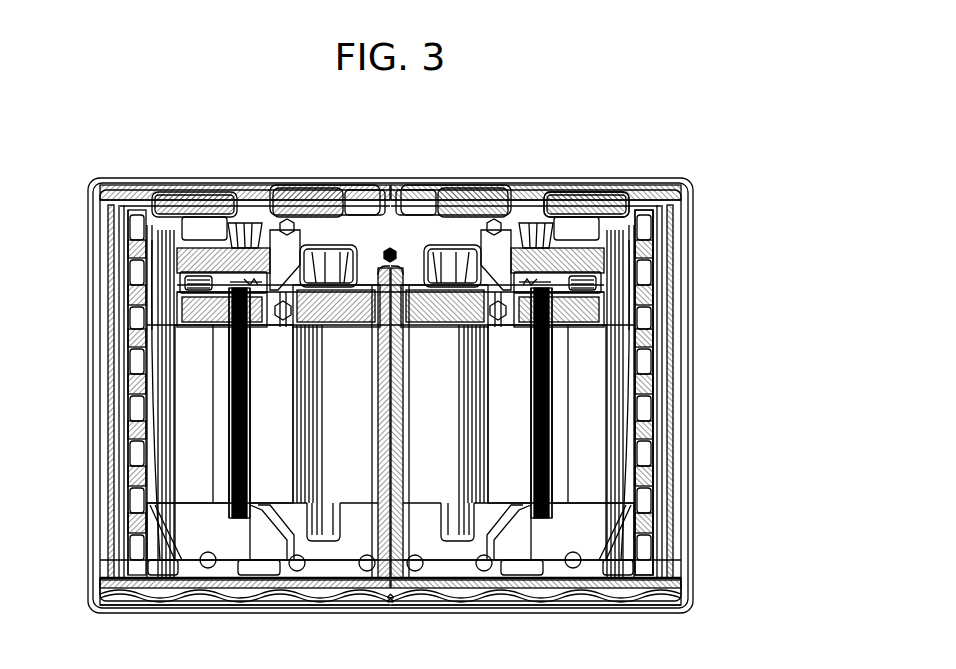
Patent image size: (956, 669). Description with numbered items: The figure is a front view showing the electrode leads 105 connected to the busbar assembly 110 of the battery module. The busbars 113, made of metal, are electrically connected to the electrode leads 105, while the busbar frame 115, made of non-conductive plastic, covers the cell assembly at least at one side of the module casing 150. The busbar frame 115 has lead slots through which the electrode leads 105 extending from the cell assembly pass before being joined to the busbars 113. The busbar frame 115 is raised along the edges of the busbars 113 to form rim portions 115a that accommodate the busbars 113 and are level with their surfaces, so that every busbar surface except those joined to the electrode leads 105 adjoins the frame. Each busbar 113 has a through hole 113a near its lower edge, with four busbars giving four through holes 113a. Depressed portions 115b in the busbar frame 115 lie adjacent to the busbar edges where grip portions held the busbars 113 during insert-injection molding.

The busbar assembly 110 is at (697, 216).
The module casing 150 is at (582, 188).
The busbar frame 115 is at (645, 293).
The depressed portion 115b is at (260, 343).
The electrode lead 105 is at (350, 430).
The rim portion 115a is at (180, 527).
The busbar 113 is at (205, 532).
The through hole 113a is at (205, 567).